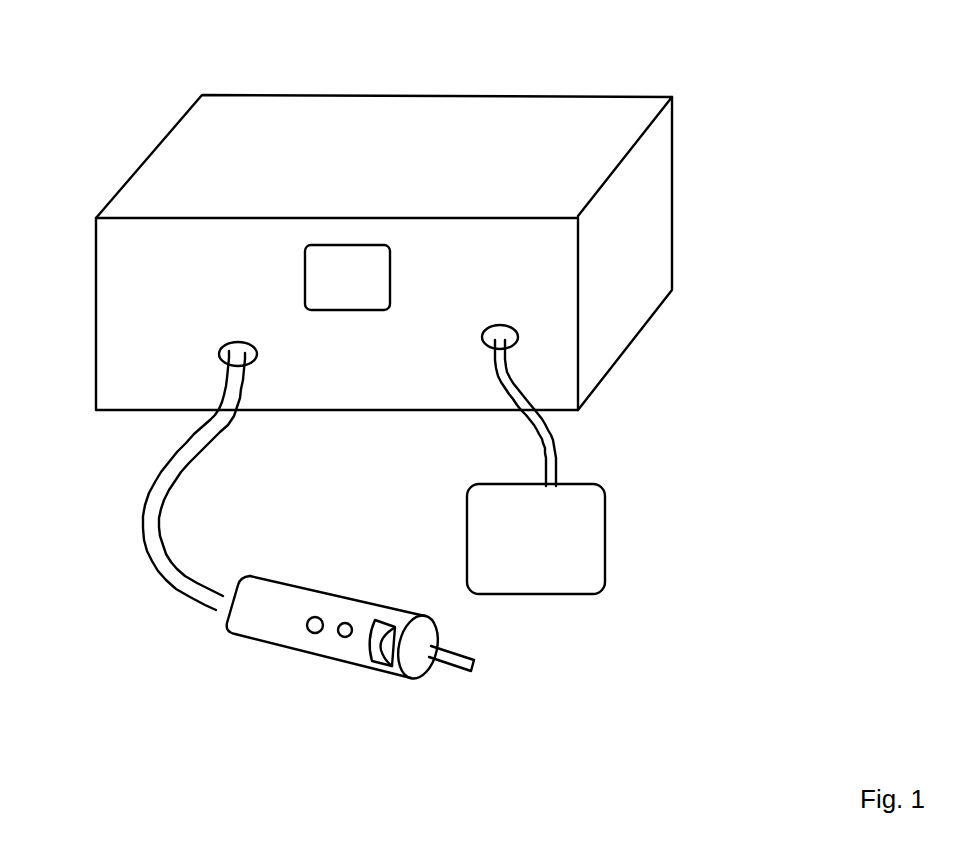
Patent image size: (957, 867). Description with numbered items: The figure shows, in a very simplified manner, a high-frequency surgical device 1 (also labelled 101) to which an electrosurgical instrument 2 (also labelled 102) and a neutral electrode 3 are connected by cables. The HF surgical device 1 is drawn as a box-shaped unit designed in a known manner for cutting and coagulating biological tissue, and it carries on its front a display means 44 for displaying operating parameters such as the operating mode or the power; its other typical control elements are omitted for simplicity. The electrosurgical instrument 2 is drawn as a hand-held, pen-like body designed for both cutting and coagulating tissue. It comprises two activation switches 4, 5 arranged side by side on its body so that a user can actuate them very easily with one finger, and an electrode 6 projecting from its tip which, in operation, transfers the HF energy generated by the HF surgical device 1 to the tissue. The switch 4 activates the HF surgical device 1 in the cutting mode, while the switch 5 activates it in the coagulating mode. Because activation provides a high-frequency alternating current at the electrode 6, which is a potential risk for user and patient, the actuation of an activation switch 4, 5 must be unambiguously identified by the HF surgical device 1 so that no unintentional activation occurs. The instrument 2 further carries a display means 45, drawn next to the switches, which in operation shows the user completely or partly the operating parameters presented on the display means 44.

The HF surgical device 1 is at (443, 117).
The device / base unit 101 is at (337, 314).
The electrosurgical instrument 2 is at (265, 627).
The handpiece 102 is at (337, 596).
The foot switch / counter electrode 3 is at (588, 555).
The activation switch 4 is at (313, 634).
The activation switch 5 is at (352, 624).
The electrode 6 is at (460, 657).
The display means 44 is at (370, 277).
The display means 45 is at (382, 657).